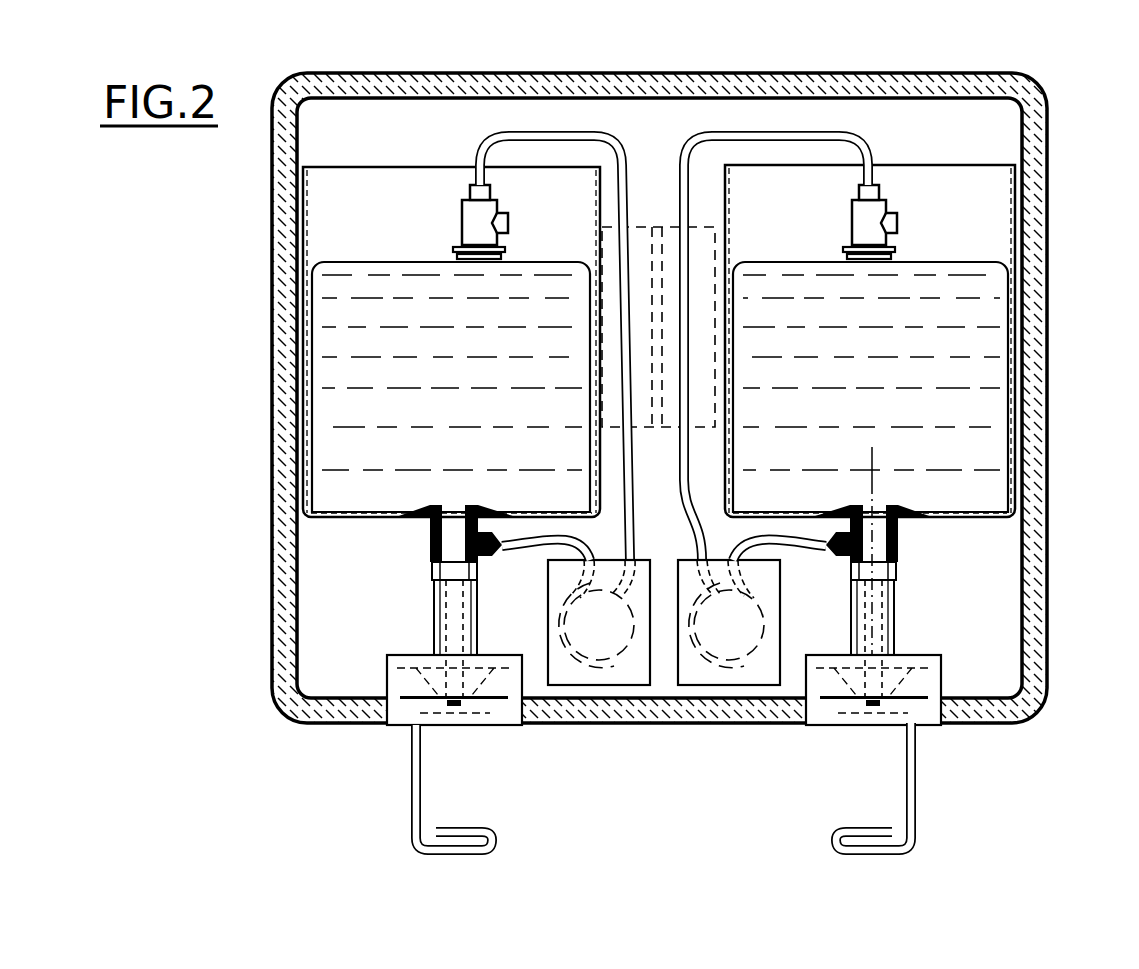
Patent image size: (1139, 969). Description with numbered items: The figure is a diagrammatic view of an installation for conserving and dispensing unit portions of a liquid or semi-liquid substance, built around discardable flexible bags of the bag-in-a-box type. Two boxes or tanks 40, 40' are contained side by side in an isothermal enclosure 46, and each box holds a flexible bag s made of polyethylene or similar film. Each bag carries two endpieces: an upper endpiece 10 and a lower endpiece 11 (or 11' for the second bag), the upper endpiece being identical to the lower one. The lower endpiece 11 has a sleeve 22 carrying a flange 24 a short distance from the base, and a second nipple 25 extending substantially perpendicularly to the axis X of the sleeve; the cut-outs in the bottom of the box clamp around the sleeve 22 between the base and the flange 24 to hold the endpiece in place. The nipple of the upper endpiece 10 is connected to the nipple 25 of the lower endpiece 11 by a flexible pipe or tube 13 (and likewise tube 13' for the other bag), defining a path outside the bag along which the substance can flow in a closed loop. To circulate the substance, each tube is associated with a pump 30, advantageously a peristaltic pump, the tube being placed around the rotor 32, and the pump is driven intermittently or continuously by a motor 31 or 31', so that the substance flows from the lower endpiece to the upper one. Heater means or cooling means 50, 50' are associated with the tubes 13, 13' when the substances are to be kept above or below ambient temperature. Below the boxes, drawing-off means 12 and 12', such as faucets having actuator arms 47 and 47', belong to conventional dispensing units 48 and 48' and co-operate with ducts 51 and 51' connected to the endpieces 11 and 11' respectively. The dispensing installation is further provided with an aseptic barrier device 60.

The endpiece 10 is at (902, 181).
The endpiece 11 is at (924, 560).
The endpiece 11' is at (428, 542).
The drawing-off means 12 is at (868, 719).
The drawing-off means 12' is at (462, 724).
The flexible pipe or tube 13 is at (776, 289).
The flexible pipe or tube 13' is at (555, 289).
The sleeve 22 is at (924, 533).
The flange 24 is at (882, 250).
The second nipple 25 is at (850, 557).
The pump 30 is at (727, 702).
The motor 31 is at (729, 669).
The motor 31' is at (599, 669).
The rotor 32 is at (710, 635).
The box or tank 40 is at (924, 341).
The box or tank 40' is at (451, 267).
The isothermal enclosure 46 is at (1038, 410).
The actuator arm 47 is at (907, 786).
The actuator arm 47' is at (416, 787).
The dispensing unit 48 is at (921, 617).
The dispensing unit 48' is at (423, 617).
The heater means or cooling means 50 is at (658, 222).
The heater means or cooling means 50' is at (640, 222).
The duct 51 is at (928, 620).
The duct 51' is at (491, 620).
The aseptic barrier device 60 is at (888, 732).
The flexible bag S is at (983, 260).
The axis of the sleeve X is at (856, 618).